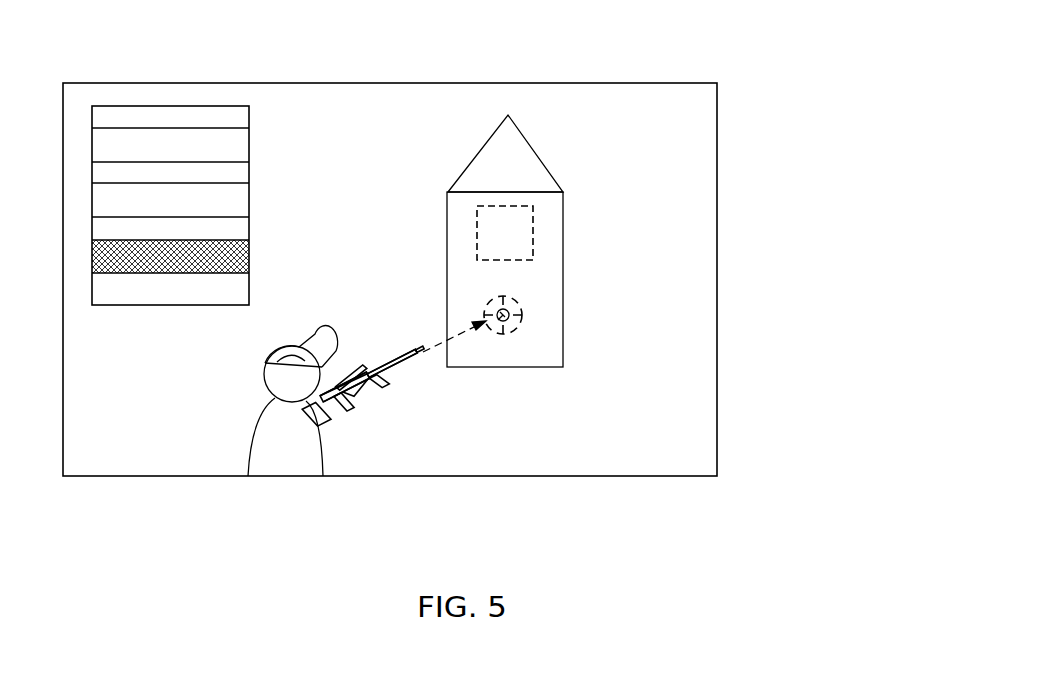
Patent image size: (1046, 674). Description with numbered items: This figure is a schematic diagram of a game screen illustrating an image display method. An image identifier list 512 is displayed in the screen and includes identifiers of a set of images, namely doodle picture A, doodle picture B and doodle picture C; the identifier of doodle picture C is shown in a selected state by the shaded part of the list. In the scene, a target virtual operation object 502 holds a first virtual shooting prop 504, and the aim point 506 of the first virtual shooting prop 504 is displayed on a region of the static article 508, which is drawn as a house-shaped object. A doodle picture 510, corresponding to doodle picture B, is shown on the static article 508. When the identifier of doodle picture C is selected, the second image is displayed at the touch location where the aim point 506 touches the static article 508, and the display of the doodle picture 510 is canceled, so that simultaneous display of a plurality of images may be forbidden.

The target virtual operation object 502 is at (272, 438).
The first virtual shooting prop 504 is at (352, 398).
The aim point 506 is at (520, 328).
The static article 508 is at (536, 152).
The doodle picture 510 is at (533, 238).
The image identifier list 512 is at (159, 106).